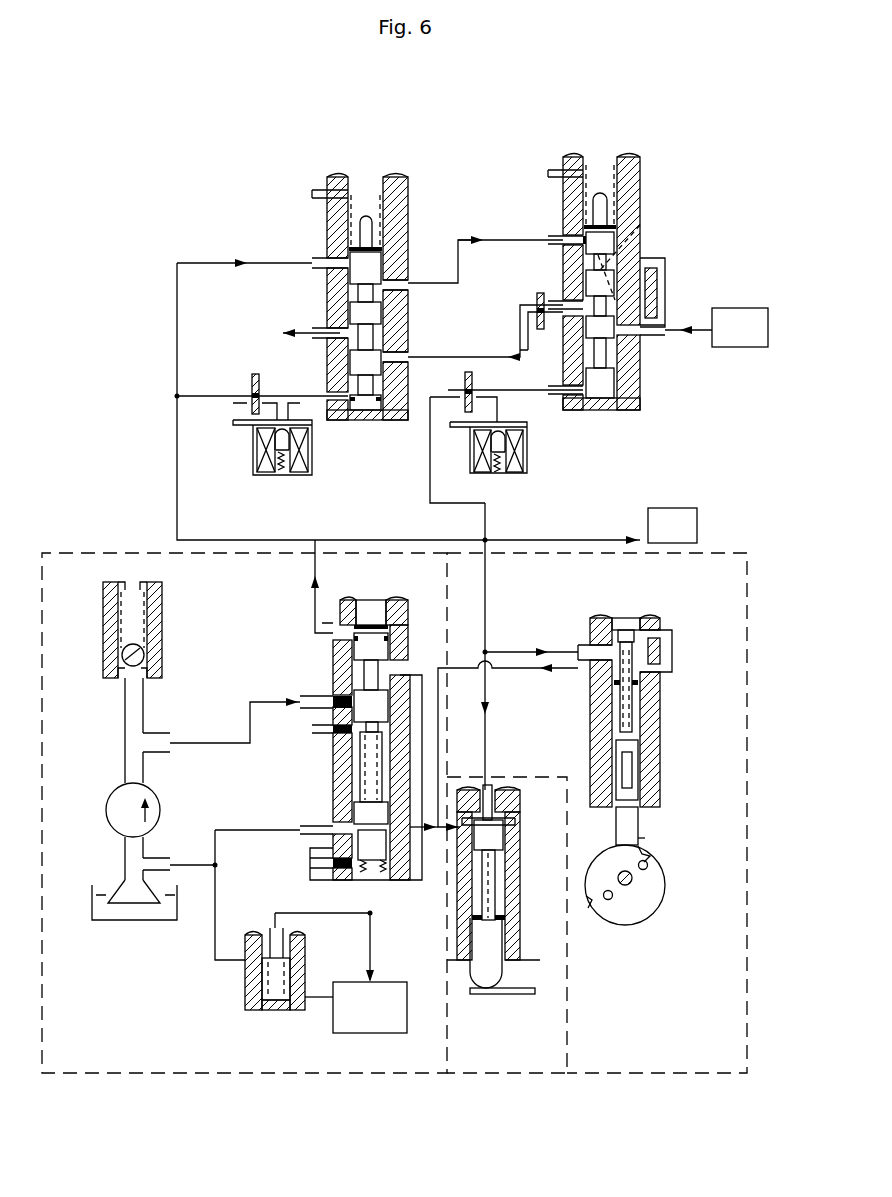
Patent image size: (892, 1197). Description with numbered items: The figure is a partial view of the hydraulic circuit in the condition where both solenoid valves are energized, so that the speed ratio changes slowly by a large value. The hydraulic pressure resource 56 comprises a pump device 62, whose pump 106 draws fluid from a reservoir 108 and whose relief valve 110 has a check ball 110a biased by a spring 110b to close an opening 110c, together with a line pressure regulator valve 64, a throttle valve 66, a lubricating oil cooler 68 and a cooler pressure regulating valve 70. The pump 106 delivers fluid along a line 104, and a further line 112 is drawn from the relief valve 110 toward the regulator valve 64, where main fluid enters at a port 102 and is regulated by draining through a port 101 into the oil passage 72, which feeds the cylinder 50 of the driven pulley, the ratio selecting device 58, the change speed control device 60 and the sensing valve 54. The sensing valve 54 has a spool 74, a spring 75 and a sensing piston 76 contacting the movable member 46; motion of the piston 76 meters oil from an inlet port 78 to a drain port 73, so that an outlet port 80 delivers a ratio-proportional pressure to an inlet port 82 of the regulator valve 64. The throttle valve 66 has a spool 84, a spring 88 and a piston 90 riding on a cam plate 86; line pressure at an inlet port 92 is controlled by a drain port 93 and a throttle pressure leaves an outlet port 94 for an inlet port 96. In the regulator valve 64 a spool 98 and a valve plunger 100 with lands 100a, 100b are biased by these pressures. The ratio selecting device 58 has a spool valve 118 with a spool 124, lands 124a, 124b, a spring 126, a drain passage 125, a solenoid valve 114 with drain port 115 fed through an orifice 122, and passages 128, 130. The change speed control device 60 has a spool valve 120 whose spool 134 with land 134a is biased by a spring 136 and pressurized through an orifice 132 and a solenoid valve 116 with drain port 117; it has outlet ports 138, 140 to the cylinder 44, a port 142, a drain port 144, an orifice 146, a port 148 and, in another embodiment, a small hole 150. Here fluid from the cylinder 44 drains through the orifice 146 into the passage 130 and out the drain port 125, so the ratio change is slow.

The hydraulic cylinder 44 is at (730, 308).
The movable member 46 is at (522, 996).
The cylinder 50 is at (685, 508).
The sensing valve 54 is at (520, 930).
The hydraulic pressure resource 56 is at (63, 548).
The ratio selecting device 58 is at (235, 207).
The change speed control device 60 is at (520, 196).
The pump device 62 is at (69, 637).
The line pressure regulator valve 64 is at (374, 728).
The throttle valve 66 is at (682, 684).
The lubricating oil cooler 68 is at (398, 1025).
The cooler pressure regulating valve 70 is at (252, 985).
The oil passage 72 is at (177, 318).
The drain port 73 is at (460, 880).
The spool 74 is at (510, 845).
The spring 75 is at (505, 872).
The sensing piston 76 is at (470, 968).
The inlet port 78 is at (485, 910).
The outlet port 80 is at (500, 808).
The inlet port 82 is at (448, 820).
The spool 84 is at (628, 618).
The cam plate 86 is at (645, 912).
The spring 88 is at (650, 690).
The piston 90 is at (640, 815).
The inlet port 92 is at (580, 645).
The drain port 93 is at (582, 705).
The outlet port 94 is at (578, 672).
The inlet port 96 is at (310, 862).
The spool 98 is at (372, 605).
The valve plunger 100 is at (355, 800).
The land 100a is at (410, 810).
The land 100b is at (350, 880).
The port 101 is at (312, 730).
The port 102 is at (305, 695).
The pressure line 104 is at (240, 830).
The pump 106 is at (143, 798).
The reservoir 108 is at (140, 920).
The relief valve 110 is at (144, 682).
The check ball 110a is at (148, 660).
The spring 110b is at (120, 645).
The opening 110c is at (128, 685).
The supply line 112 is at (158, 725).
The solenoid valve 114 is at (293, 461).
The drain port 115 is at (270, 440).
The solenoid valve 116 is at (519, 457).
The drain port 117 is at (485, 440).
The spool valve 118 is at (415, 298).
The spool valve 120 is at (607, 283).
The orifice 122 is at (252, 380).
The spool 124 is at (358, 265).
The land 124a is at (380, 418).
The land 124b is at (400, 275).
The drain passage 125 is at (330, 338).
The spring 126 is at (395, 188).
The passage 128 is at (505, 238).
The passage 130 is at (448, 355).
The orifice 132 is at (470, 372).
The spool 134 is at (596, 160).
The land 134a is at (610, 410).
The spring 136 is at (612, 162).
The first outlet port 138 is at (645, 262).
The second outlet port 140 is at (660, 340).
The port 142 is at (560, 240).
The drain port 144 is at (565, 368).
The orifice 146 is at (536, 300).
The port 148 is at (585, 280).
The small hole 150 is at (645, 222).